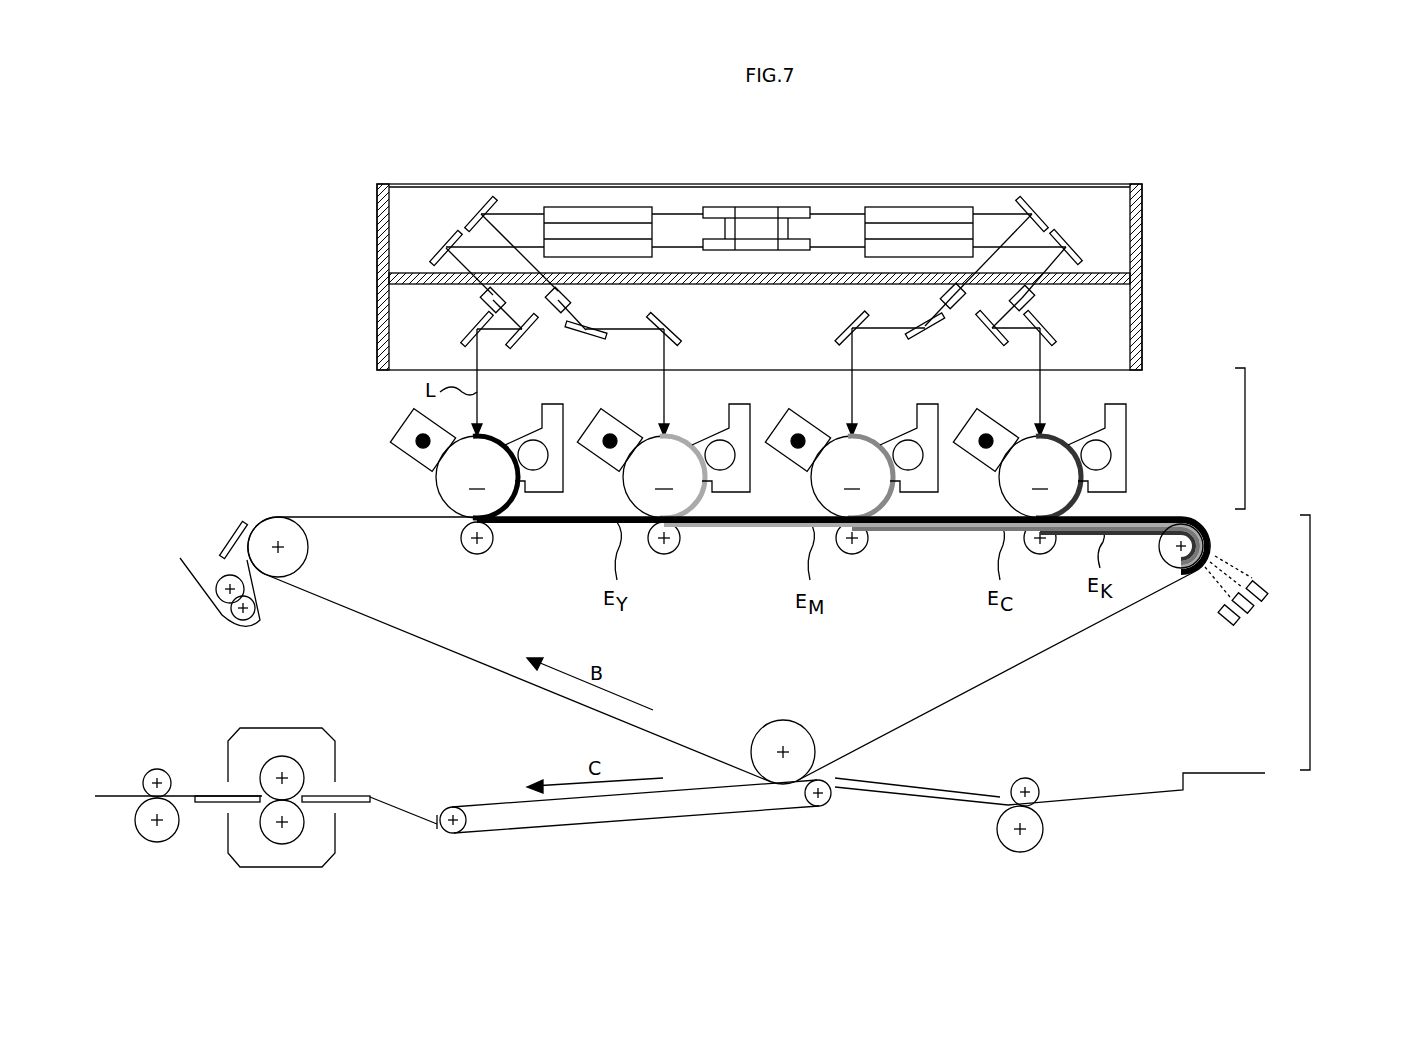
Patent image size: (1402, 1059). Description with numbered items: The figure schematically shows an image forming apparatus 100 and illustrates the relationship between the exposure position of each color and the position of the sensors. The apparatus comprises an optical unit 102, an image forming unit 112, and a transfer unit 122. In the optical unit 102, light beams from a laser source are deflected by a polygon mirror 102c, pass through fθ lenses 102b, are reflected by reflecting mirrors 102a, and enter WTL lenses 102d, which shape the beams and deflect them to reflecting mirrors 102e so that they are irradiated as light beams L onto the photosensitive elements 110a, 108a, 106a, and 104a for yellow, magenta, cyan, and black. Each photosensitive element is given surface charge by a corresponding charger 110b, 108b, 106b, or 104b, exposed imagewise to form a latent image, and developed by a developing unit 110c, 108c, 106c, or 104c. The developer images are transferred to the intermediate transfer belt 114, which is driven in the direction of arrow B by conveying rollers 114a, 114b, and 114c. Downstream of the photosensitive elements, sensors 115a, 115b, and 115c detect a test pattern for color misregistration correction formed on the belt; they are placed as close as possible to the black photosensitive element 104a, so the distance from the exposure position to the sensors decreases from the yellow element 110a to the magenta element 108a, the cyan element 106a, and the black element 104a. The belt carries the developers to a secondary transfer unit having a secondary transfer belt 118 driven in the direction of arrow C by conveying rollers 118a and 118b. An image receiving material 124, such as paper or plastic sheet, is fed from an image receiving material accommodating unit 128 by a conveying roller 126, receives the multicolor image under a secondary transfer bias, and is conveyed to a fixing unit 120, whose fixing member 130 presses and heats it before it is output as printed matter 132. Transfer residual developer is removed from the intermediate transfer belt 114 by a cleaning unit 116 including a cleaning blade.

The image forming apparatus 100 is at (1258, 259).
The optical unit 102 is at (1134, 183).
The reflecting mirror 102a is at (484, 208).
The fθ lens 102b is at (598, 212).
The polygon mirror 102c is at (790, 207).
The WTL lens 102d is at (570, 300).
The reflecting mirror 102e is at (683, 331).
The photosensitive element 104a is at (1061, 498).
The charger 104b is at (966, 447).
The developing unit 104c is at (1105, 430).
The photosensitive element 106a is at (872, 498).
The charger 106b is at (778, 447).
The developing unit 106c is at (917, 430).
The photosensitive element 108a is at (684, 498).
The charger 108b is at (590, 447).
The developing unit 108c is at (729, 430).
The photosensitive element 110a is at (497, 498).
The charger 110b is at (403, 447).
The developing unit 110c is at (542, 430).
The image forming unit 112 is at (1248, 437).
The intermediate transfer belt 114 is at (1028, 672).
The conveying roller 114a is at (1172, 570).
The conveying roller 114b is at (797, 733).
The conveying roller 114c is at (312, 557).
The sensor 115a is at (1250, 632).
The sensor 115b is at (1232, 587).
The sensor 115c is at (1241, 578).
The cleaning unit 116 is at (257, 618).
The secondary transfer belt 118 is at (652, 820).
The conveying roller 118a is at (832, 805).
The conveying roller 118b is at (462, 832).
The fixing unit 120 is at (337, 766).
The transfer unit 122 is at (1312, 647).
The image receiving material 124 is at (925, 790).
The conveying roller 126 is at (1046, 830).
The image receiving material accommodating unit 128 is at (1216, 778).
The fixing member 130 is at (290, 760).
The printed matter 132 is at (115, 795).